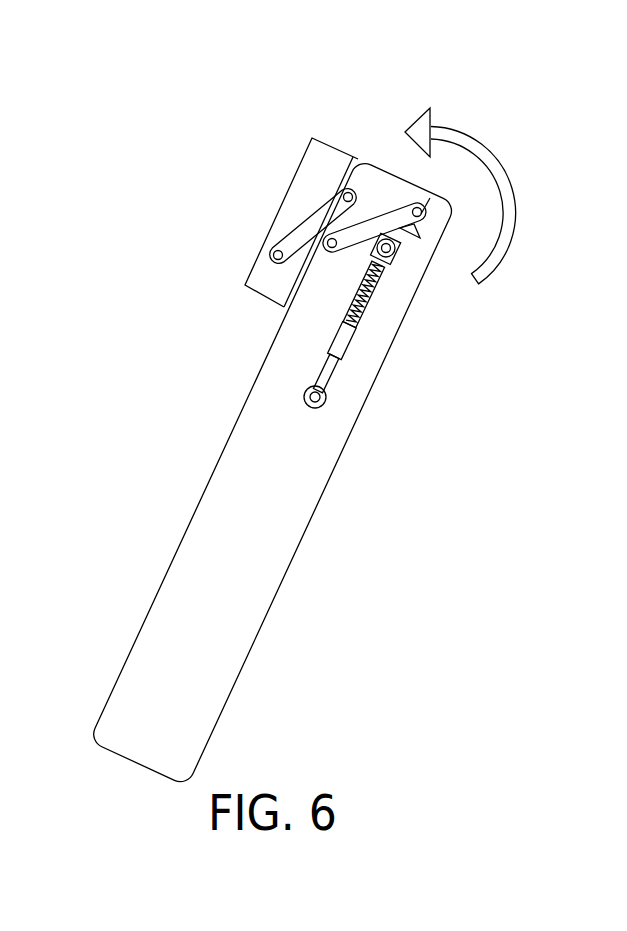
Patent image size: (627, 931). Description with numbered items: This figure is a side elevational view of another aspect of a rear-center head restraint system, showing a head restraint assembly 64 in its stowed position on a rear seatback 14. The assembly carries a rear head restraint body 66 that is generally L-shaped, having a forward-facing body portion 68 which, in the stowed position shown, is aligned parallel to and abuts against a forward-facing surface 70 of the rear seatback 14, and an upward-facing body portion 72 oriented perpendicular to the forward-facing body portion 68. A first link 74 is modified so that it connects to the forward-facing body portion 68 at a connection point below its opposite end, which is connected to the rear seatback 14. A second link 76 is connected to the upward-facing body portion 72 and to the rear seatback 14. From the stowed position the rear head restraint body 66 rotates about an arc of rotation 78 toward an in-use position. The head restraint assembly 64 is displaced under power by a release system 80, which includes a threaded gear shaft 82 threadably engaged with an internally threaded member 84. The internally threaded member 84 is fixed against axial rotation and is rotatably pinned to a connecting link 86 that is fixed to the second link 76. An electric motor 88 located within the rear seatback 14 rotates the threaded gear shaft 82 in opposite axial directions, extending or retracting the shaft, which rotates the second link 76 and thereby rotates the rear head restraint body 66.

The rear seatback 14 is at (293, 517).
The head restraint assembly 64 is at (546, 162).
The rear head restraint body 66 is at (280, 138).
The forward-facing body portion 68 is at (265, 272).
The forward-facing surface 70 is at (268, 319).
The upward-facing body portion 72 is at (403, 192).
The first link 74 is at (310, 227).
The second link 76 is at (392, 220).
The arc of rotation 78 is at (508, 208).
The release system 80 is at (413, 345).
The threaded gear shaft 82 is at (372, 296).
The internally threaded member 84 is at (377, 270).
The connecting link 86 is at (401, 246).
The electric motor 88 is at (328, 372).